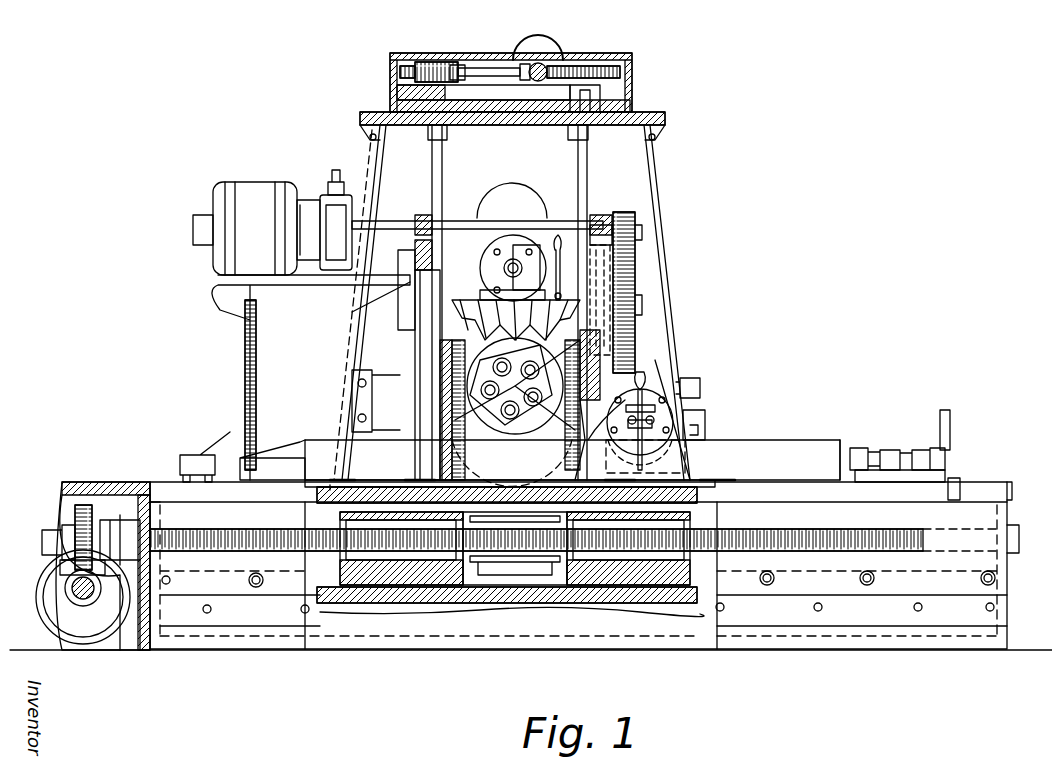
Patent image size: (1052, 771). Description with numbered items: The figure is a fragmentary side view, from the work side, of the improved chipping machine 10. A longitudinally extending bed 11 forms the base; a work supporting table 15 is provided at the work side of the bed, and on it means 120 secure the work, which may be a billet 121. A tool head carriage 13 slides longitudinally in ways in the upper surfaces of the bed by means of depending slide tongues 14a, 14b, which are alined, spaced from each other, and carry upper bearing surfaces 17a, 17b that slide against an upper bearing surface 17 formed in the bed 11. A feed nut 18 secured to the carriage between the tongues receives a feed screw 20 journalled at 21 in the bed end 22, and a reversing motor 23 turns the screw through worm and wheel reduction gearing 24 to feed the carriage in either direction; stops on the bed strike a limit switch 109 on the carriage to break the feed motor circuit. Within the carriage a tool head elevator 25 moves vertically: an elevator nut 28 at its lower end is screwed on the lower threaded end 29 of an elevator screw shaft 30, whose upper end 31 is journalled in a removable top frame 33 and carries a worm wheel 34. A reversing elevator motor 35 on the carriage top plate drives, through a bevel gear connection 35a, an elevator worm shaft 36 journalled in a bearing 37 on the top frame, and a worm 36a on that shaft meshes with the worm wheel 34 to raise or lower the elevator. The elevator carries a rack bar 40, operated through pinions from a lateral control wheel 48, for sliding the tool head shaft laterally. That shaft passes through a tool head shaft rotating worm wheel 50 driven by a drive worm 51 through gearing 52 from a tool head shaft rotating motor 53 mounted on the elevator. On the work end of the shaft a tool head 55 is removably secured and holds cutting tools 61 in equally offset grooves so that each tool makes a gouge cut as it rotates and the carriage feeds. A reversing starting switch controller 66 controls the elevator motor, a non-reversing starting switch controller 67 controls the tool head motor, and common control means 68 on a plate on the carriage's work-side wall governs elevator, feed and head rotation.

The improved chipping machine 10 is at (668, 180).
The bed 11 is at (805, 630).
The tool head carriage 13 is at (676, 330).
The slide tongue 14a is at (390, 585).
The slide tongue 14b is at (663, 585).
The work supporting table 15 is at (778, 455).
The bearing surface 17 is at (420, 503).
The bearing surface 17a is at (385, 503).
The bearing surface 17b is at (630, 485).
The feed nut 18 is at (510, 562).
The feed screw 20 is at (717, 525).
The journal 21 is at (152, 518).
The bed end 22 is at (152, 495).
The reversing motor 23 is at (40, 580).
The worm and wheel reduction gearing 24 is at (75, 523).
The tool head elevator 25 is at (445, 220).
The elevator nut 28 is at (440, 388).
The lower threaded end 29 is at (452, 408).
The elevator screw shaft 30 is at (442, 163).
The upper end 31 is at (445, 130).
The top frame 33 is at (392, 80).
The worm wheel 34 is at (407, 64).
The reversing elevator motor 35 is at (548, 45).
The bevel gear driving connection 35a is at (533, 62).
The elevator worm shaft 36 is at (485, 66).
The worm 36a is at (440, 62).
The bearing 37 is at (458, 64).
The rack bar 40 is at (503, 270).
The lateral control wheel 48 is at (568, 262).
The tool head shaft rotating worm wheel 50 is at (470, 332).
The drive worm 51 is at (485, 298).
The gearing 52 is at (640, 262).
The tool head shaft rotating motor 53 is at (245, 185).
The tool head 55 is at (507, 433).
The cutting tool 61 is at (478, 418).
The reversing starting switch controller 66 is at (705, 425).
The non-reversing starting switch controller 67 is at (700, 388).
The common control means 68 is at (648, 392).
The limit switch 109 is at (250, 385).
The work securing means 120 is at (862, 448).
The billet 121 is at (760, 440).